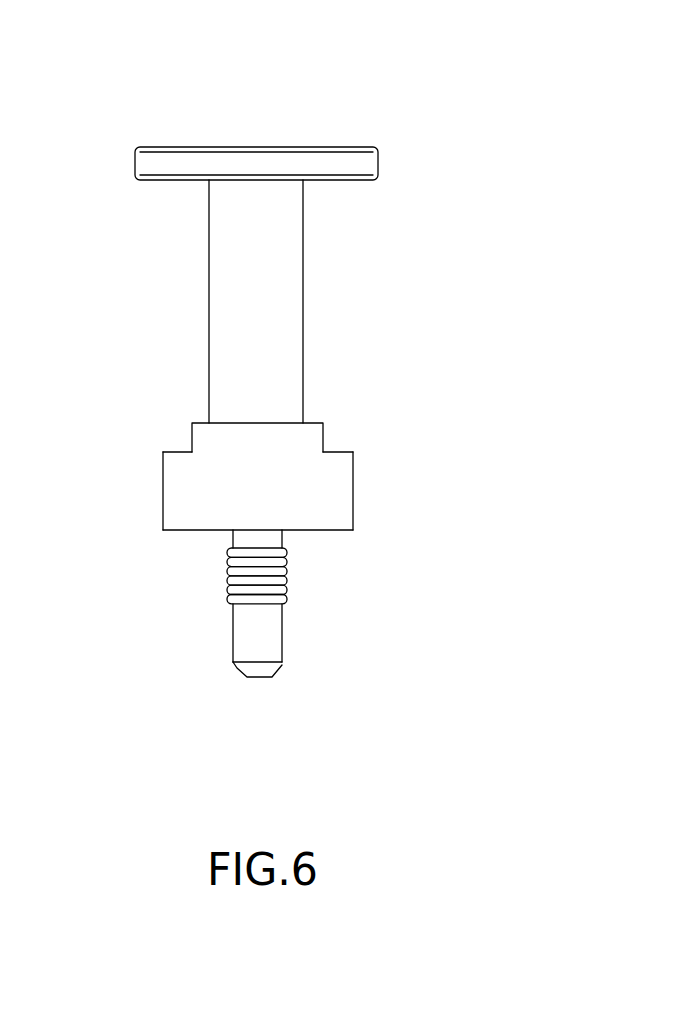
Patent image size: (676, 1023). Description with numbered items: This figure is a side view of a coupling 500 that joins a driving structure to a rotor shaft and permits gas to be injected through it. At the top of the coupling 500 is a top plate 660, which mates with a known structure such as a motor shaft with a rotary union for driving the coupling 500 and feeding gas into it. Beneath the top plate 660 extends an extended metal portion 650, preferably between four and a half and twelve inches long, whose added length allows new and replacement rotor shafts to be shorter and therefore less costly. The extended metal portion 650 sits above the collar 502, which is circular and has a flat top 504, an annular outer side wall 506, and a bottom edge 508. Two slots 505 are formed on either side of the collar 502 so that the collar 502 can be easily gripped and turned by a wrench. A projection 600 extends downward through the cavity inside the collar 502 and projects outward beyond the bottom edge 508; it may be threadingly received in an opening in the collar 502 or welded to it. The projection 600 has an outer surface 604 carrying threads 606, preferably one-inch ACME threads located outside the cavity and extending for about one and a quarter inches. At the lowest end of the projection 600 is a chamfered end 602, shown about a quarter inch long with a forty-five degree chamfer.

The coupling 500 is at (407, 134).
The top plate 660 is at (169, 132).
The extended metal portion 650 is at (196, 272).
The collar 502 is at (367, 468).
The flat top 504 is at (314, 421).
The slots 505 is at (180, 449).
The annular outer side wall 506 is at (355, 507).
The bottom edge 508 is at (333, 530).
The projection 600 is at (296, 639).
The threads 606 is at (228, 550).
The outer surface 604 is at (233, 636).
The chamfered end 602 is at (273, 672).